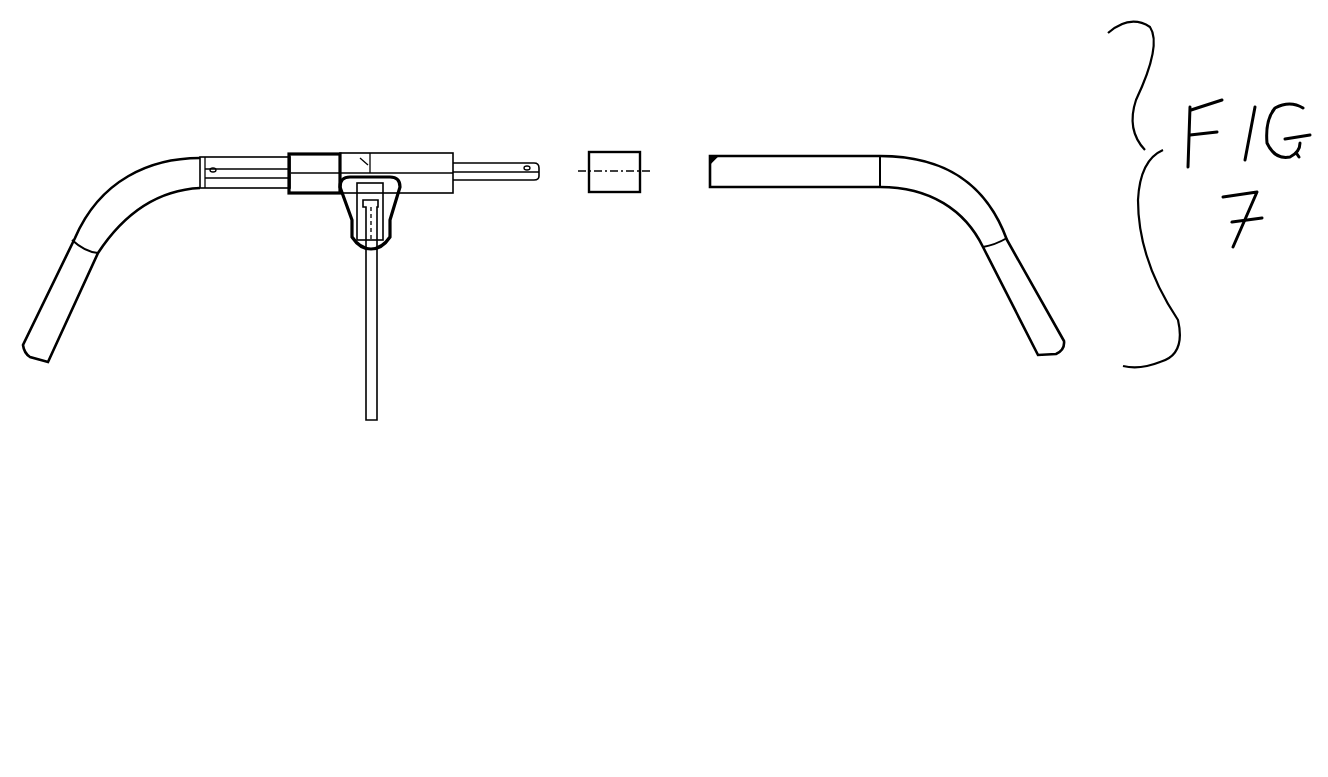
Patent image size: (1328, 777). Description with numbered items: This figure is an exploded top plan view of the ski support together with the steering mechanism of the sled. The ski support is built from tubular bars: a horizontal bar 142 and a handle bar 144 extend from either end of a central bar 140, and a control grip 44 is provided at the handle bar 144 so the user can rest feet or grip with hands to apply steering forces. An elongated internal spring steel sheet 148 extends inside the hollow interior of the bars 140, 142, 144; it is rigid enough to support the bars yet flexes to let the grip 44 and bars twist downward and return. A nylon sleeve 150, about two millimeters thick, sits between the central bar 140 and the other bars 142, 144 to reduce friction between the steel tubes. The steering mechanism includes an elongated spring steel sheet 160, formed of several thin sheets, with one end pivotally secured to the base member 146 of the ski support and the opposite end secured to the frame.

The control grip 44 is at (900, 243).
The central bar 140 is at (382, 153).
The horizontal bar 142 is at (780, 153).
The handle bar 144 is at (980, 198).
The base member 146 is at (400, 190).
The elongated internal spring steel sheet 148 is at (497, 166).
The nylon sleeve 150 is at (303, 152).
The elongated spring steel sheet 160 is at (378, 396).